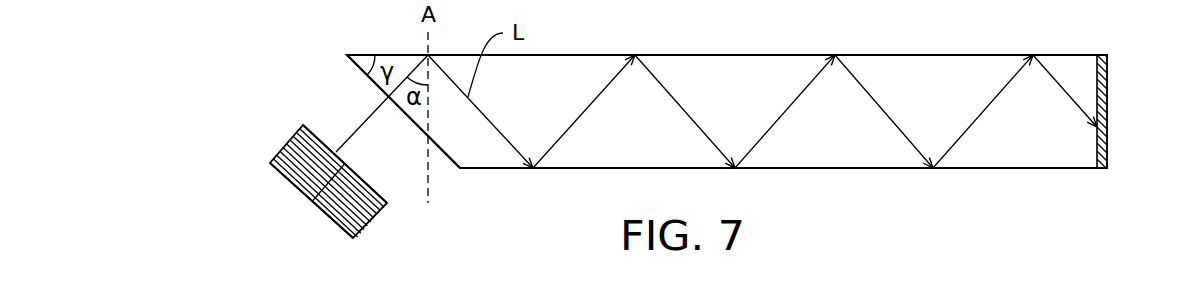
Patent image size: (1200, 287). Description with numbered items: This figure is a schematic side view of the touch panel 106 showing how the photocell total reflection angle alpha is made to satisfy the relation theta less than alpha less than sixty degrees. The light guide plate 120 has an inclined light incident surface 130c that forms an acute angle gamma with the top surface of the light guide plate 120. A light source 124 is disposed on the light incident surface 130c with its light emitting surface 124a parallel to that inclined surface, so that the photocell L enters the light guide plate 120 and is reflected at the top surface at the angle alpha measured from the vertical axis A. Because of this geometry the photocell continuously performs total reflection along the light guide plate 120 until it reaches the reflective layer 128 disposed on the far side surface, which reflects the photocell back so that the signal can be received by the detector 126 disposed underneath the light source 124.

The touch panel 106 is at (1153, 211).
The light guide plate 120 is at (988, 68).
The light source 124 is at (300, 155).
The light emitting surface 124a is at (322, 143).
The detector 126 is at (333, 219).
The reflective layer 128 is at (1105, 116).
The light incident surface 130c is at (420, 131).